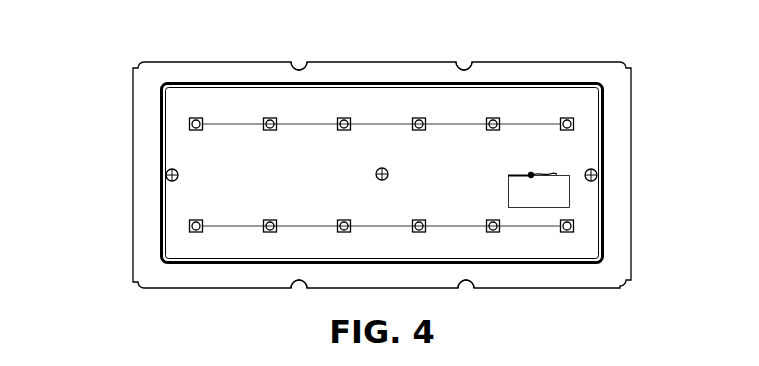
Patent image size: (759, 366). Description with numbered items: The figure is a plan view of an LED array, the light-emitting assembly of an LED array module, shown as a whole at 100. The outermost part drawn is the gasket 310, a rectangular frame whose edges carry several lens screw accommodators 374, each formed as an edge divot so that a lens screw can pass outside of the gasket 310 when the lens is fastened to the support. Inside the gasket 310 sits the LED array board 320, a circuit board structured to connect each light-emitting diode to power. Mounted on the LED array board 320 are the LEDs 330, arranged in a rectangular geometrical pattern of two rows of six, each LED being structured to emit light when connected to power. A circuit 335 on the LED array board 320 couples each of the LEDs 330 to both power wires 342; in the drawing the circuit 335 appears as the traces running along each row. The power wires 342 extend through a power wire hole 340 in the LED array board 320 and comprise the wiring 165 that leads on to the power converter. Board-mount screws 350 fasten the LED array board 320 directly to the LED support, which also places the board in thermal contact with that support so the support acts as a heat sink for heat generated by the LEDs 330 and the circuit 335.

The lighting assembly 100 is at (369, 170).
The wiring 165 is at (429, 173).
The gasket 310 is at (632, 96).
The LED array board 320 is at (604, 138).
The LEDs 330 is at (275, 130).
The circuit 335 is at (314, 216).
The power wire hole 340 is at (521, 190).
The power wires 342 is at (528, 172).
The board-mount screw 350 is at (178, 173).
The lens screw accommodator 374 is at (129, 59).